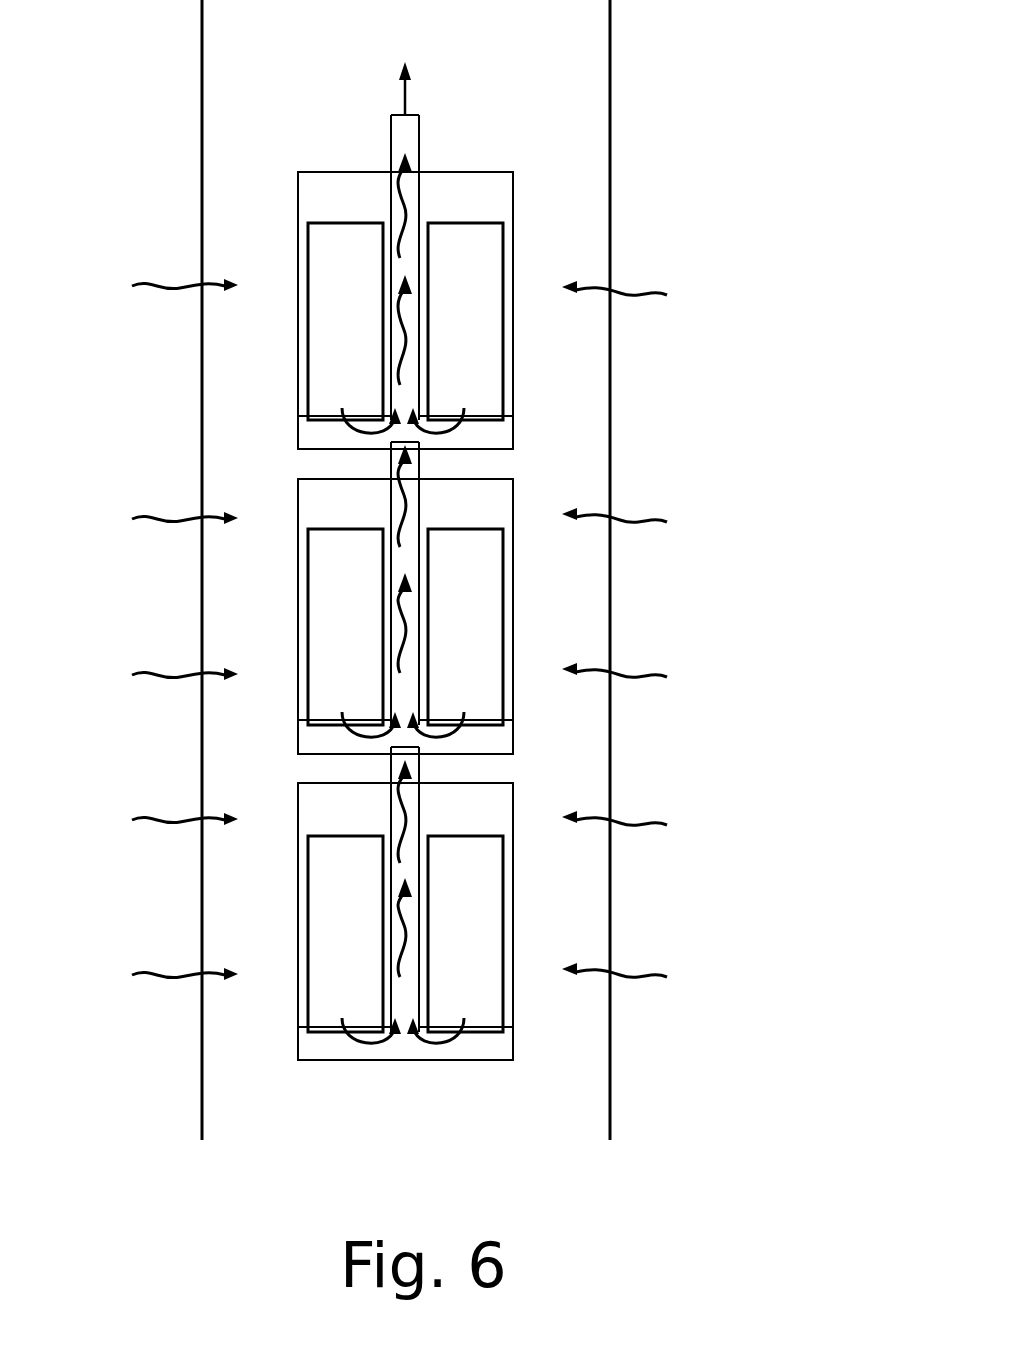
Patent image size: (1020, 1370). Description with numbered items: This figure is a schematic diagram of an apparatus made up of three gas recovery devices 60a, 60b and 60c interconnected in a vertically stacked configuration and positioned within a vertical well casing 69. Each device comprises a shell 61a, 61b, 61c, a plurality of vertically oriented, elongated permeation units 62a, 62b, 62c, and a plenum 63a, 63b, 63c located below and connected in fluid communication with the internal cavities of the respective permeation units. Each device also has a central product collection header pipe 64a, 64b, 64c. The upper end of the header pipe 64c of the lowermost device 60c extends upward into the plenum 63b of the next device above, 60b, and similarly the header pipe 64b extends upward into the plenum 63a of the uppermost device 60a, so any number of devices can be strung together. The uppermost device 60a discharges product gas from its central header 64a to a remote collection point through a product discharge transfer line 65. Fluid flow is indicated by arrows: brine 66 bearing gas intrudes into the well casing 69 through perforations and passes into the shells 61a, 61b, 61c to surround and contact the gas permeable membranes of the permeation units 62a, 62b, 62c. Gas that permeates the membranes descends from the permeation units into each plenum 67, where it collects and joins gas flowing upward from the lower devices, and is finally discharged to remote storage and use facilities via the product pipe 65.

The uppermost recovery device 60a is at (513, 252).
The recovery device 60b is at (513, 528).
The lowermost recovery device 60c is at (513, 876).
The shell 61a is at (372, 172).
The shell 61b is at (318, 479).
The shell 61c is at (314, 783).
The permeation units 62a is at (370, 317).
The permeation units 62b is at (370, 608).
The permeation units 62c is at (370, 906).
The plenum 63a is at (505, 438).
The plenum 63b is at (505, 742).
The plenum 63c is at (503, 1053).
The central product collection header pipe 64a is at (417, 145).
The central product collection header pipe 64b is at (393, 685).
The central product collection header pipe 64c is at (395, 975).
The product discharge transfer line 65 is at (405, 112).
The brine 66 is at (396, 632).
The plenum 67 is at (405, 709).
The vertical well casing 69 is at (612, 150).